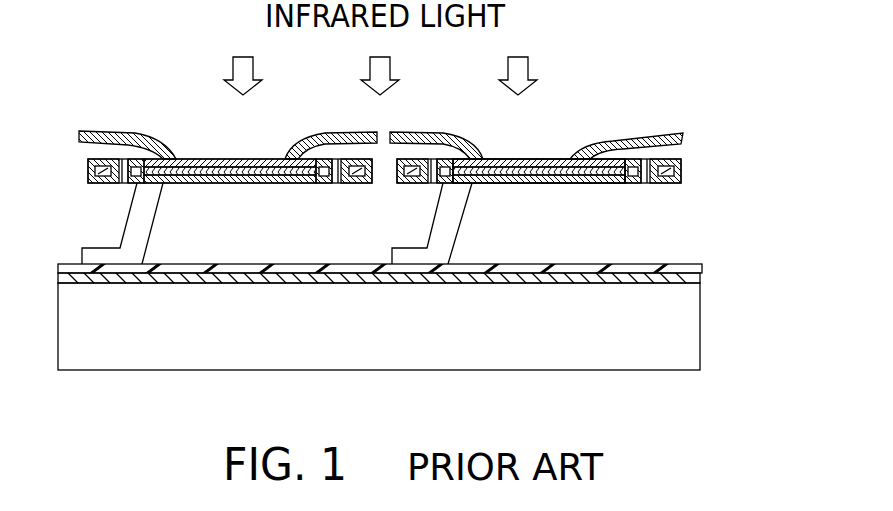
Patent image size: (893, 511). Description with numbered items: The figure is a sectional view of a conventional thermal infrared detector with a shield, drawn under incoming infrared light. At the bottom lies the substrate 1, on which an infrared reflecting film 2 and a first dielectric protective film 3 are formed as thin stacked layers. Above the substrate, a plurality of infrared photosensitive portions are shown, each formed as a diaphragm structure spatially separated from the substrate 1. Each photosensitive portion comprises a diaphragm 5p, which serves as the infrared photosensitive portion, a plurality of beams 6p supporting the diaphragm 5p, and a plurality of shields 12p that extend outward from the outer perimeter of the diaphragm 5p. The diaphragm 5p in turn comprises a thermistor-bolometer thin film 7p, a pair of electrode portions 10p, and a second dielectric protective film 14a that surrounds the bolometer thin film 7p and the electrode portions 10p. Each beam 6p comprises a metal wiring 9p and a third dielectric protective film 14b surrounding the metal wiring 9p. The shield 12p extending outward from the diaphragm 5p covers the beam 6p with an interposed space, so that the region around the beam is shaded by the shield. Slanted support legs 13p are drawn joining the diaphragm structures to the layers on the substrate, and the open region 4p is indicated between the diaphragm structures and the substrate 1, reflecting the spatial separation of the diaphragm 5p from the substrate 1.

The substrate 1 is at (690, 358).
The infrared reflecting film 2 is at (700, 283).
The first dielectric protective film 3 is at (702, 265).
The cavity 4p is at (545, 247).
The diaphragm 5p is at (609, 109).
The beam 6p is at (739, 182).
The thermistor-bolometer thin film 7p is at (609, 109).
The metal wiring 9p is at (680, 181).
The electrode portion 10p is at (592, 110).
The shield 12p is at (675, 128).
The support leg 13p is at (462, 217).
The second dielectric protective film 14a is at (590, 159).
The third dielectric protective film 14b is at (680, 164).